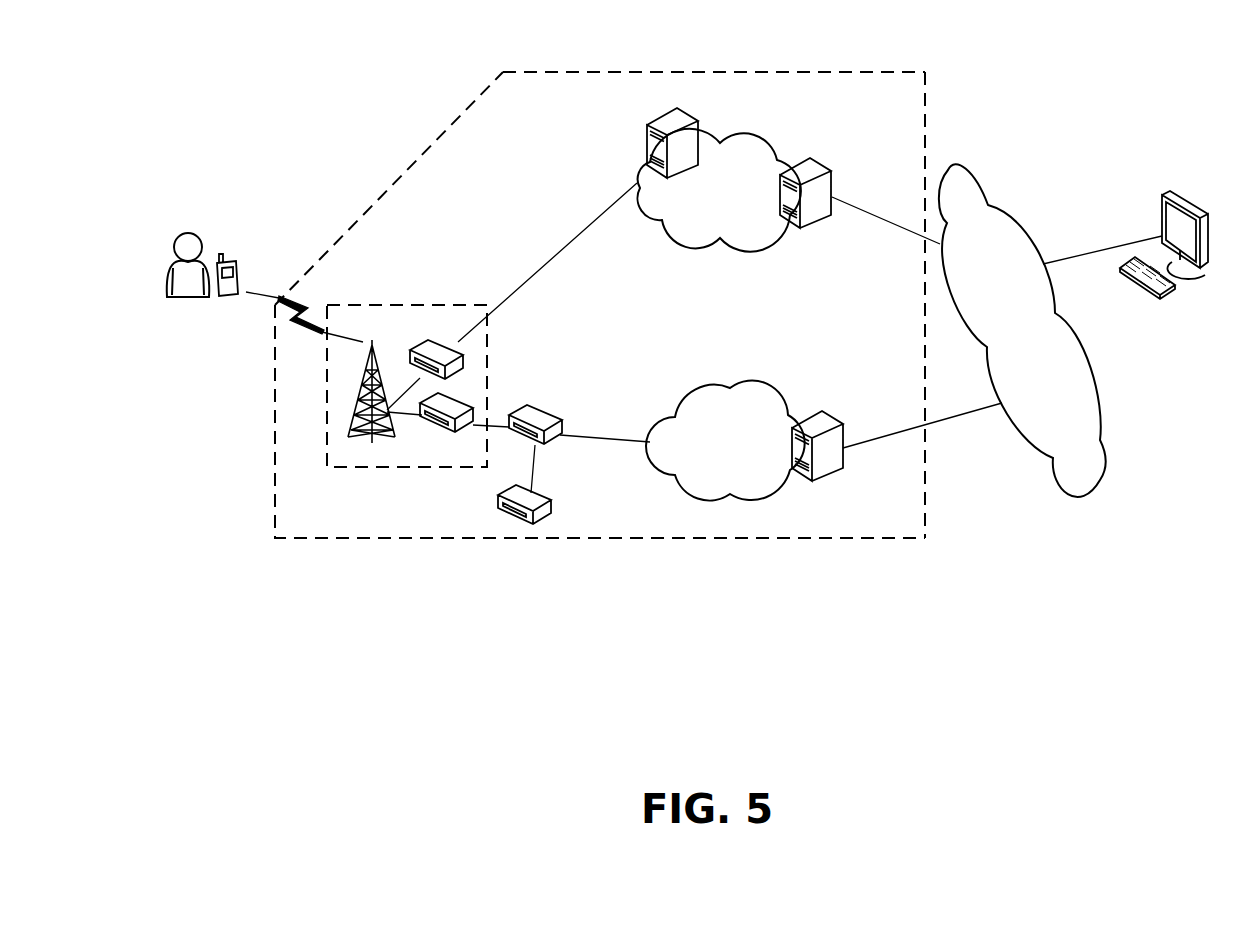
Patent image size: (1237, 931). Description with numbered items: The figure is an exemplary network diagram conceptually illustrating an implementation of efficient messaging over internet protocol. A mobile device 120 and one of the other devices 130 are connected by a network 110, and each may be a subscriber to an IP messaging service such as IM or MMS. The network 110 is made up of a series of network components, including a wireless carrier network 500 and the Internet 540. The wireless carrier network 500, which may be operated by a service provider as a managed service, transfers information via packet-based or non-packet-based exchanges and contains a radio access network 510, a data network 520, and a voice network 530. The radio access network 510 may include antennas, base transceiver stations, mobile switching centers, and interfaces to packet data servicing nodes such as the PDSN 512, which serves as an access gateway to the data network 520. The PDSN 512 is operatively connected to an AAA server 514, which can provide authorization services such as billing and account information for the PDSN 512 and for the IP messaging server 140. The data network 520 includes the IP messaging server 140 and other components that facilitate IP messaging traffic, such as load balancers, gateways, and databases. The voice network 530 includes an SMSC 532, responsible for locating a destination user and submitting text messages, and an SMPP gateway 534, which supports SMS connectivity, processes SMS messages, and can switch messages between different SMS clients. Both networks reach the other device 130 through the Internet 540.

The network 110 is at (943, 114).
The mobile device 120 is at (236, 229).
The other device 130 is at (1150, 170).
The IP messaging server 140 is at (843, 477).
The wireless carrier network 500 is at (457, 118).
The radio access network 510 is at (397, 305).
The PDSN 512 is at (542, 405).
The AAA server 514 is at (543, 489).
The data network 520 is at (693, 387).
The voice network 530 is at (690, 250).
The SMSC 532 is at (645, 132).
The SMPP gateway 534 is at (823, 160).
The Internet 540 is at (995, 208).